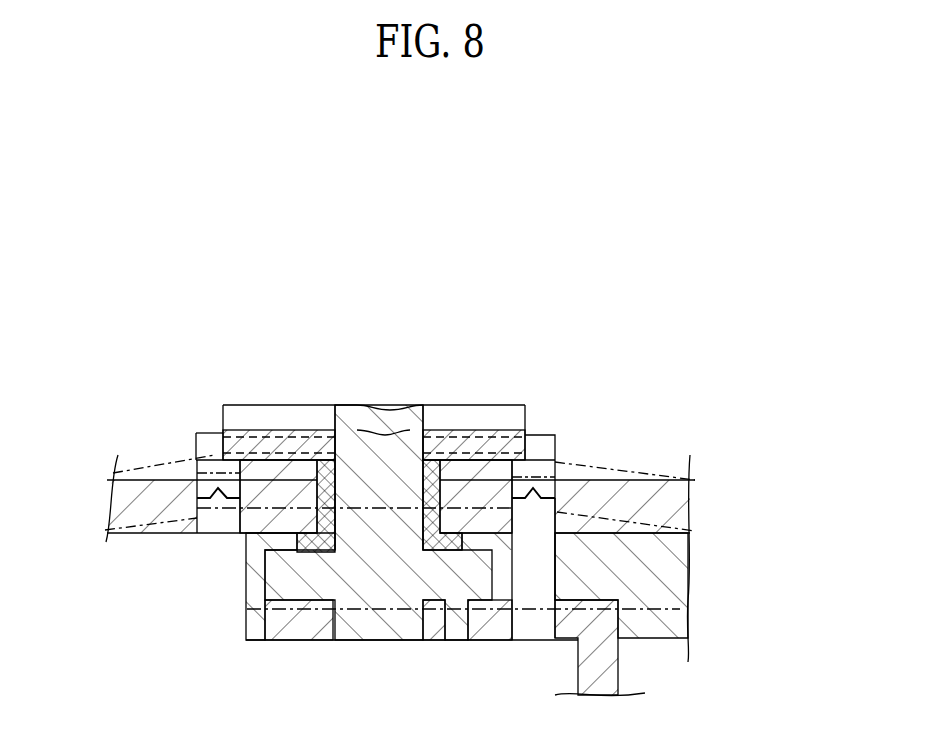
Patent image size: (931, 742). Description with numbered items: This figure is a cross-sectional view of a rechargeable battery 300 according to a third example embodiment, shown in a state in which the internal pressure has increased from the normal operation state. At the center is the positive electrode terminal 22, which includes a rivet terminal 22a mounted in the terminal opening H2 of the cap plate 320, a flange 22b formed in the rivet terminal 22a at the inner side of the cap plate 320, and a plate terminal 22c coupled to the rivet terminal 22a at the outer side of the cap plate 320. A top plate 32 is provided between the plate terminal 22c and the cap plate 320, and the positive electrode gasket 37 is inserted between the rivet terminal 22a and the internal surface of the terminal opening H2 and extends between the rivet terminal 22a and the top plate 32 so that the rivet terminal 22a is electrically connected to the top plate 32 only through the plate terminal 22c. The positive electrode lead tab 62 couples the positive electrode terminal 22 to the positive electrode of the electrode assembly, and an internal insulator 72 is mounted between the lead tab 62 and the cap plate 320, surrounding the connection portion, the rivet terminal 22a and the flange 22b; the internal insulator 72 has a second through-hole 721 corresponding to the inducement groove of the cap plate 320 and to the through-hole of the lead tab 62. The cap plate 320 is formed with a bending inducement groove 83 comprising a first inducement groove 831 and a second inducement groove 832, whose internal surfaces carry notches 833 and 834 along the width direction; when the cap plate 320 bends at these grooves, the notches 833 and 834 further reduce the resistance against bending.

The rechargeable battery 300 is at (415, 198).
The positive electrode terminal 22 is at (436, 368).
The rivet terminal 22a is at (378, 568).
The flange 22b is at (290, 578).
The plate terminal 22c is at (490, 440).
The top plate 32 is at (543, 455).
The positive electrode gasket 37 is at (301, 490).
The terminal opening H2 is at (318, 515).
The cap plate 320 is at (142, 497).
The bending inducement groove 83 is at (716, 289).
The second inducement groove 832 is at (535, 523).
The first inducement groove 831 is at (163, 608).
The notch 833 is at (220, 500).
The notch 834 is at (538, 507).
The internal insulator 72 is at (652, 566).
The second through-hole 721 is at (556, 555).
The positive electrode lead tab 62 is at (607, 682).